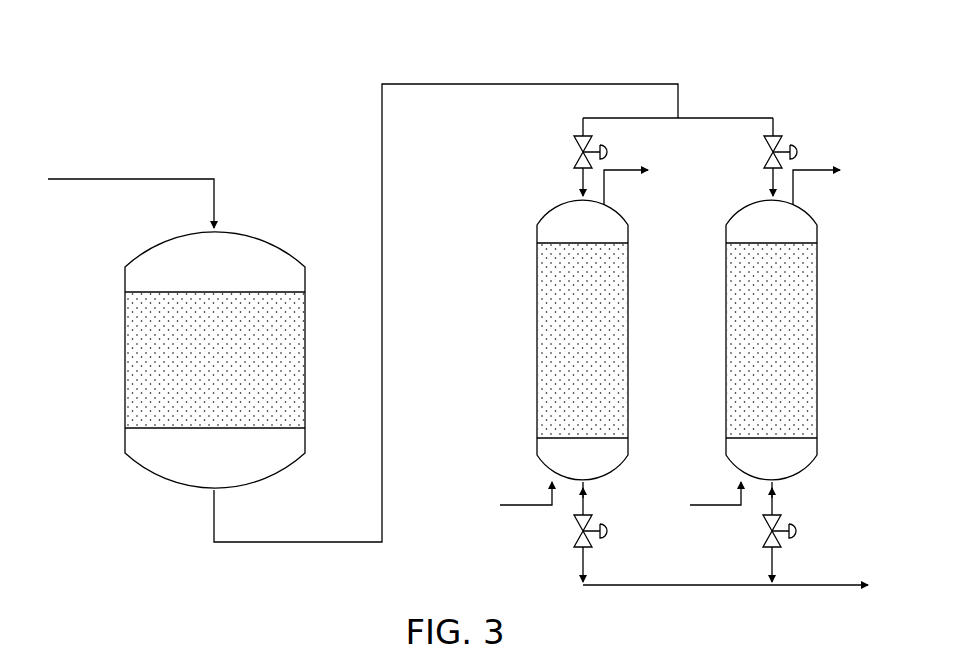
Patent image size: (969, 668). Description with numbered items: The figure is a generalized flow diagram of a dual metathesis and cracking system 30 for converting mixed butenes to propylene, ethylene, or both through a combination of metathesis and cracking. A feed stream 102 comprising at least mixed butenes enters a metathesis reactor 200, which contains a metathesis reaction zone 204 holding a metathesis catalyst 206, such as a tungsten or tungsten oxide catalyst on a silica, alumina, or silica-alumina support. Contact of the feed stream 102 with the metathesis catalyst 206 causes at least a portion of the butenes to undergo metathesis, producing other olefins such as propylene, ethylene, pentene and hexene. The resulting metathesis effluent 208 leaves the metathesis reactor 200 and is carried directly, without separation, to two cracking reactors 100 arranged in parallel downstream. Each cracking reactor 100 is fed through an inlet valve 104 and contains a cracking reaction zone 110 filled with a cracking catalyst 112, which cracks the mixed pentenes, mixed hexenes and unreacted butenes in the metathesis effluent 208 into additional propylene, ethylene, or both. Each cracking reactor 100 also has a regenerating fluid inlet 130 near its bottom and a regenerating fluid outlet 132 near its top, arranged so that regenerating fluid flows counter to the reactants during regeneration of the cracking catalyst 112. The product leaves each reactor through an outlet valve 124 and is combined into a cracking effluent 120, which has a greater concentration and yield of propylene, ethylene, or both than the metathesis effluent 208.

The dual metathesis and cracking system 30 is at (840, 94).
The cracking reactor 100 is at (537, 263).
The feed stream 102 is at (132, 179).
The inlet valve 104 is at (576, 146).
The cracking reaction zone 110 is at (546, 330).
The cracking catalyst 112 is at (548, 385).
The cracking effluent 120 is at (815, 587).
The outlet valve 124 is at (594, 517).
The regenerating fluid inlet 130 is at (528, 505).
The regenerating fluid outlet 132 is at (629, 170).
The metathesis reactor 200 is at (125, 310).
The metathesis reaction zone 204 is at (143, 360).
The metathesis catalyst 206 is at (128, 404).
The metathesis effluent 208 is at (297, 545).